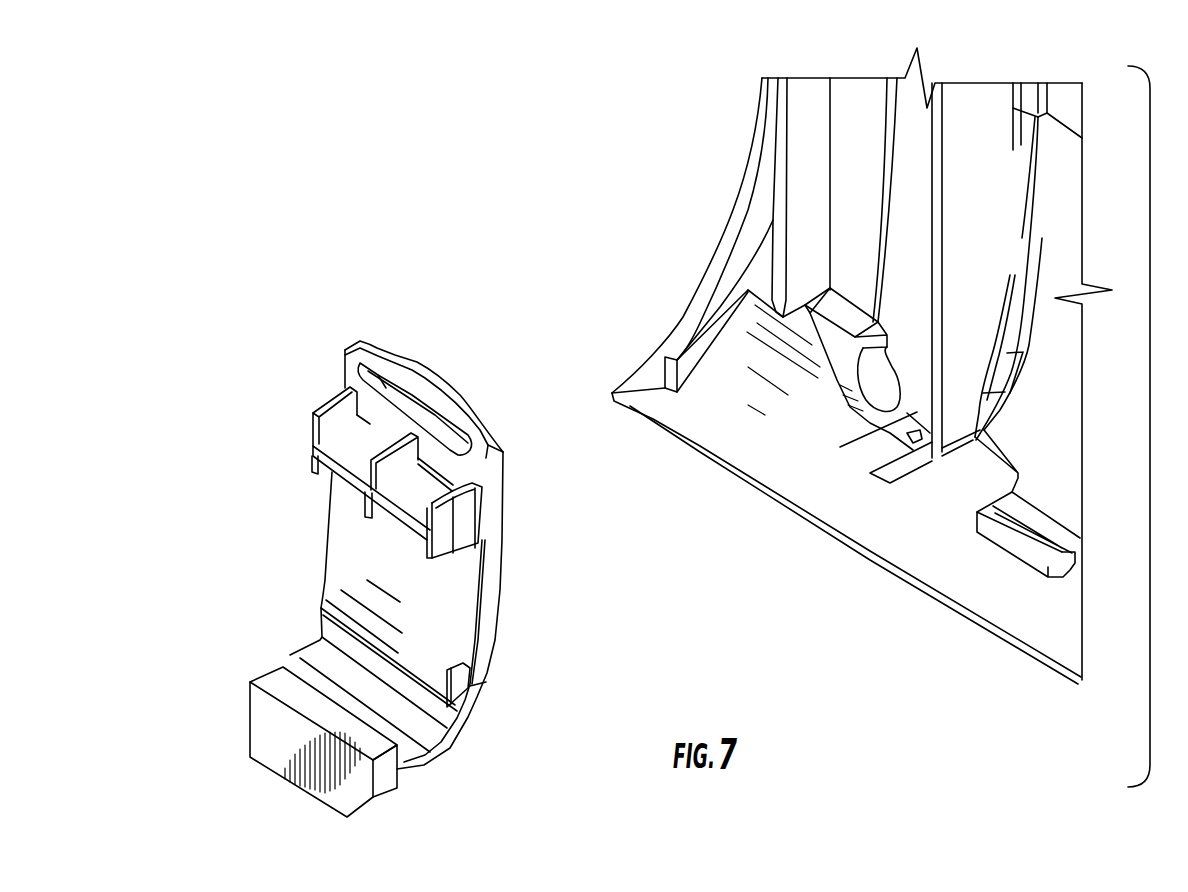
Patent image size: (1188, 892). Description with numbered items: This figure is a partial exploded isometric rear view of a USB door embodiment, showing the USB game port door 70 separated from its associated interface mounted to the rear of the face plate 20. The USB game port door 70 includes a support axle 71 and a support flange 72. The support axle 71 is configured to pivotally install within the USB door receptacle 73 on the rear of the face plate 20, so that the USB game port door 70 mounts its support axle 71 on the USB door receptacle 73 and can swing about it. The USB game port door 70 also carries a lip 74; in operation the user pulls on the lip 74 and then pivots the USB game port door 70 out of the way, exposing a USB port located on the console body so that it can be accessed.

The face plate 20 is at (881, 417).
The USB game port door 70 is at (495, 657).
The support axle 71 is at (377, 732).
The support flange 72 is at (347, 786).
The USB door receptacle 73 is at (872, 433).
The lip 74 is at (427, 415).